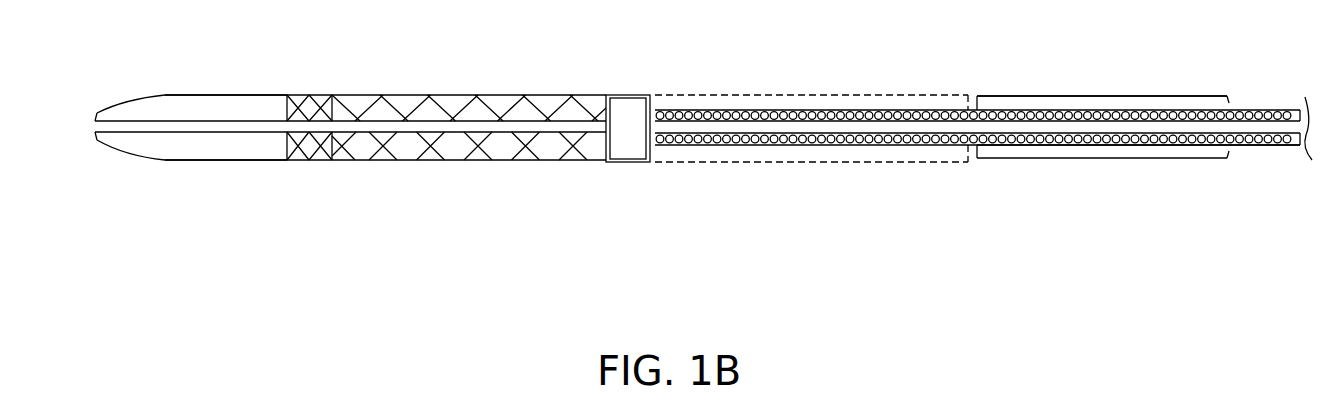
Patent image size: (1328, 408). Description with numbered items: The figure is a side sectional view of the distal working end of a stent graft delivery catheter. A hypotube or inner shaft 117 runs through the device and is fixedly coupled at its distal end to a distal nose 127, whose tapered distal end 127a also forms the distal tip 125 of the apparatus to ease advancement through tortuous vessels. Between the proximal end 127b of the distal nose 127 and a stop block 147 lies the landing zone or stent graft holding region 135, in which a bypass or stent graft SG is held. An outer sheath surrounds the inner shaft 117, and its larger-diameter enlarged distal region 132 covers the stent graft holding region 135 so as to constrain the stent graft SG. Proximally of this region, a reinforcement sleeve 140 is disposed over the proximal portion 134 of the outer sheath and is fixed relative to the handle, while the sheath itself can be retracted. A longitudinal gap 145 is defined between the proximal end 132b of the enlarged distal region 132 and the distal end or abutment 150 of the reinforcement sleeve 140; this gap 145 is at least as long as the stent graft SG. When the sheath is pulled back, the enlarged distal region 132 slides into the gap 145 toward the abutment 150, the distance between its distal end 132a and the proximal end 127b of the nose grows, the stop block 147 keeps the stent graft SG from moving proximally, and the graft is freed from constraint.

The distal tip 125 is at (97, 143).
The distal end 127a is at (343, 165).
The distal nose 127 is at (200, 162).
The proximal end 127b is at (288, 161).
The enlarged distal region 132 is at (449, 93).
The distal end 132a is at (311, 93).
The proximal end 132b is at (617, 199).
The stent graft SG is at (451, 152).
The stent graft holding region 135 is at (550, 182).
The stop block 147 is at (640, 162).
The longitudinal gap 145 is at (840, 163).
The distal end or abutment 150 is at (972, 163).
The inner shaft 117 is at (1140, 110).
The proximal portion 134 is at (1116, 148).
The reinforcement sleeve 140 is at (1197, 160).